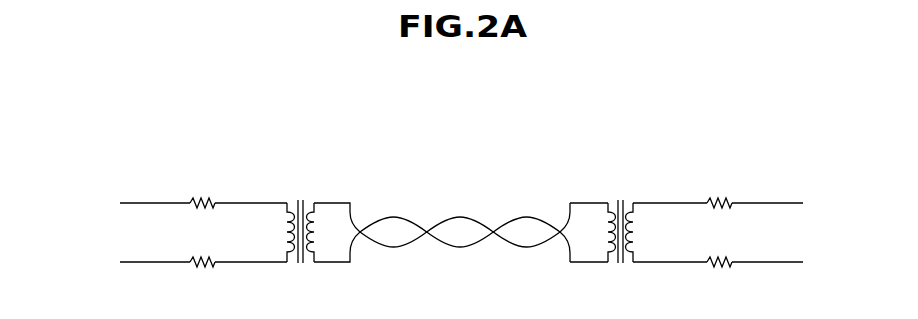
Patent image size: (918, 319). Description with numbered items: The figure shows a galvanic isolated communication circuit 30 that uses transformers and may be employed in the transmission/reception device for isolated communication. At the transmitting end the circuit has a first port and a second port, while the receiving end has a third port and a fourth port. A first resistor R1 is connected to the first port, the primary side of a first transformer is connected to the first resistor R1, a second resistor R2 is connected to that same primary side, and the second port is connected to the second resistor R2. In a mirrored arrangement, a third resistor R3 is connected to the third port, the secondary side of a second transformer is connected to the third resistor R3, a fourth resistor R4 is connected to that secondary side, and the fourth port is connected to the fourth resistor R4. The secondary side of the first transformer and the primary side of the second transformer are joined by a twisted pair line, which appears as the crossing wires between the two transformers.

The galvanic isolated communication circuit 30 is at (150, 148).
The first resistor R1 is at (202, 183).
The second resistor R2 is at (202, 283).
The third resistor R3 is at (719, 183).
The fourth resistor R4 is at (719, 282).